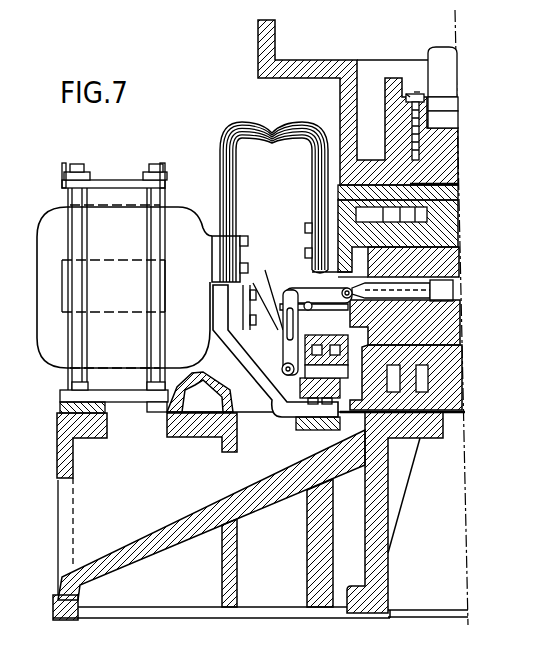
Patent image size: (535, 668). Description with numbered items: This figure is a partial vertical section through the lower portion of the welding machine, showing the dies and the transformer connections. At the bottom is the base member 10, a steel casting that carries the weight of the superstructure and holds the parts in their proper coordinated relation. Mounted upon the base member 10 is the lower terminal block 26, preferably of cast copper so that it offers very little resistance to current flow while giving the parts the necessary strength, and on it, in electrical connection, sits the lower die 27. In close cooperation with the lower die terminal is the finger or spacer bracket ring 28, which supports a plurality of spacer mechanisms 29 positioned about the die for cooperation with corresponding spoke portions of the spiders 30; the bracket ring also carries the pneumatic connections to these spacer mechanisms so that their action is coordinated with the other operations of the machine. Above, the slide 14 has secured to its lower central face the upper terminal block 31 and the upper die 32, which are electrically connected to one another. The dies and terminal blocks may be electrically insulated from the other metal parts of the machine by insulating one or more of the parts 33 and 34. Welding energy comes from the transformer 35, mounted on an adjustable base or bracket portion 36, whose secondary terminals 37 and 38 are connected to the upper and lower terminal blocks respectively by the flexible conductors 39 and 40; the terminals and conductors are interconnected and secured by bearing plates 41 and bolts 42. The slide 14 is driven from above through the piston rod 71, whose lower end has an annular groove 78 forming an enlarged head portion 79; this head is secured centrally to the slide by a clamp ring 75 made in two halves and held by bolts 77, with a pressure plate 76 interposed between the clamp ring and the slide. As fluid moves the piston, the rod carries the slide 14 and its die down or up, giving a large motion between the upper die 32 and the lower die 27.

The base member 10 is at (385, 585).
The slide 14 is at (443, 160).
The lower terminal block 26 is at (460, 357).
The lower die 27 is at (458, 316).
The finger or spacer bracket ring 28 is at (284, 350).
The spacer mechanisms 29 is at (316, 308).
The spiders 30 is at (448, 292).
The upper terminal block 31 is at (452, 208).
The upper die 32 is at (455, 256).
The insulating part 33 is at (440, 184).
The insulating part 34 is at (430, 412).
The transformer 35 is at (57, 222).
The adjustable base or bracket portion 36 is at (60, 405).
The secondary terminal 37 is at (218, 235).
The secondary terminal 38 is at (222, 340).
The flexible conductor 39 is at (320, 180).
The flexible conductor 40 is at (287, 414).
The bearing plates 41 is at (308, 226).
The bolts 42 is at (250, 268).
The piston rod 71 is at (444, 65).
The clamp ring 75 is at (417, 92).
The pressure plate 76 is at (421, 138).
The bolts 77 is at (411, 95).
The annular groove 78 is at (447, 103).
The enlarged head portion 79 is at (447, 119).